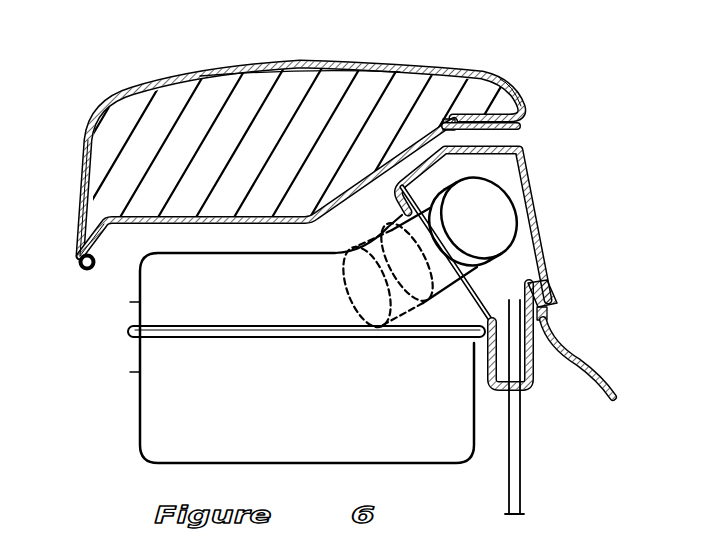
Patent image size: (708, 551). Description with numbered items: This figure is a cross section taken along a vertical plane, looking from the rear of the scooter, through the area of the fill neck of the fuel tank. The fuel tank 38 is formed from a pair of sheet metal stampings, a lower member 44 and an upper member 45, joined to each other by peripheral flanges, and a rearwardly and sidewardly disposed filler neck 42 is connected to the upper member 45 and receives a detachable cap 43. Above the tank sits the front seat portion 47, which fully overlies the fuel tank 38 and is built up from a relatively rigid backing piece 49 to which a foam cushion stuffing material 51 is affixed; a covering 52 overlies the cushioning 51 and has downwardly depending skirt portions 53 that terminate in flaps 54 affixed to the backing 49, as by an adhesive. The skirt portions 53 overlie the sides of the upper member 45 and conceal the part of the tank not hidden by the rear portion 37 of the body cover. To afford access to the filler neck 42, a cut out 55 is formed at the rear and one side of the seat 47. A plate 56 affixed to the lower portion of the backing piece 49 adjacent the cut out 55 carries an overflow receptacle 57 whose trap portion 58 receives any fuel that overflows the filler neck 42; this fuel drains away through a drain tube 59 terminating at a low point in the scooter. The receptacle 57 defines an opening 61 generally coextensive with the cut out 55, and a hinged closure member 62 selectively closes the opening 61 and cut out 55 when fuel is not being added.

The rear portion of body cover 37 is at (594, 350).
The fuel tank 38 is at (128, 427).
The filler neck 42 is at (438, 300).
The detachable cap 43 is at (492, 208).
The lower member 44 is at (140, 372).
The upper member 45 is at (140, 302).
The front seat portion 47 is at (112, 97).
The backing piece 49 is at (300, 222).
The cushion stuffing material 51 is at (223, 85).
The covering 52 is at (364, 66).
The skirt portions 53 is at (80, 208).
The flaps 54 is at (87, 272).
The cut out 55 is at (456, 124).
The plate 56 is at (508, 99).
The overflow receptacle 57 is at (543, 372).
The trap portion 58 is at (507, 353).
The drain tube 59 is at (520, 457).
The opening 61 is at (540, 280).
The closure member 62 is at (548, 242).